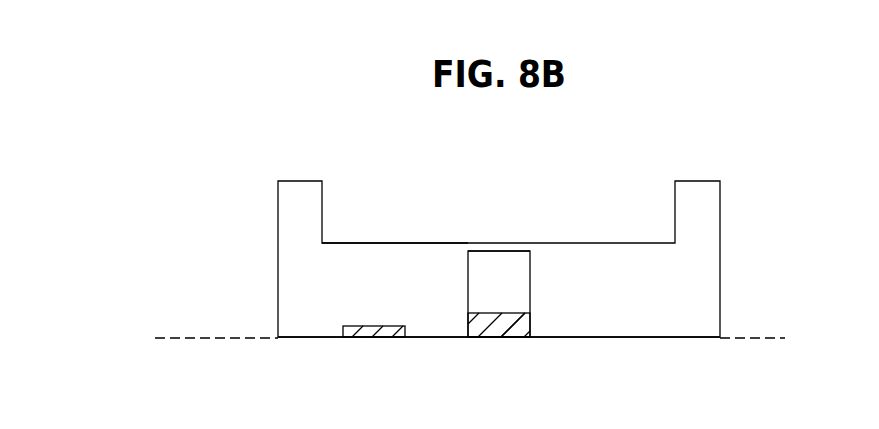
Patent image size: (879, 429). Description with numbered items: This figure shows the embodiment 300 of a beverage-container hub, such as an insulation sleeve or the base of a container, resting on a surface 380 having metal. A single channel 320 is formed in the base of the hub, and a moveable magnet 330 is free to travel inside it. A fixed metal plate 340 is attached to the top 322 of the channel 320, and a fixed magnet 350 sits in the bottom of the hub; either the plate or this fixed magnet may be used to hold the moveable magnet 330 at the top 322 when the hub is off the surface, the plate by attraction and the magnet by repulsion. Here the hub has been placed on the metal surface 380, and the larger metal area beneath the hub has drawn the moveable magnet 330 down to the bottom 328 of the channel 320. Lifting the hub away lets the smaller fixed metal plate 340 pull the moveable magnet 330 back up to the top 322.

The embodiment 300 is at (200, 121).
The channel 320 is at (558, 294).
The top of the channel 322 is at (468, 243).
The bottom of the channel 328 is at (492, 337).
The moveable magnet 330 is at (518, 326).
The fixed metal plate 340 is at (510, 251).
The fixed magnet 350 is at (357, 326).
The surface 380 is at (197, 338).